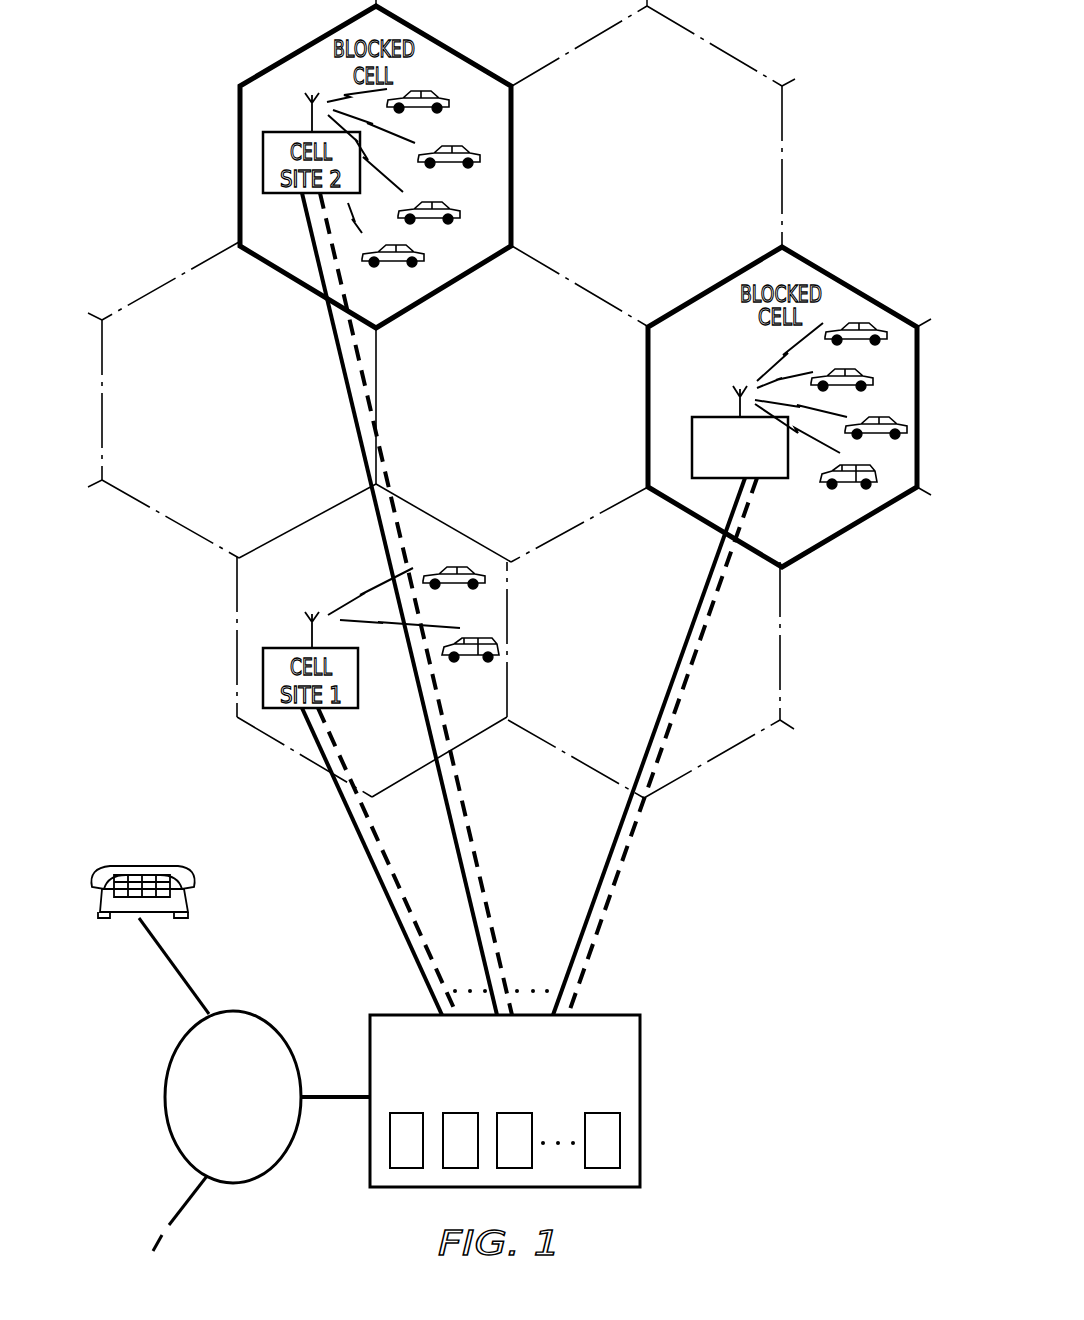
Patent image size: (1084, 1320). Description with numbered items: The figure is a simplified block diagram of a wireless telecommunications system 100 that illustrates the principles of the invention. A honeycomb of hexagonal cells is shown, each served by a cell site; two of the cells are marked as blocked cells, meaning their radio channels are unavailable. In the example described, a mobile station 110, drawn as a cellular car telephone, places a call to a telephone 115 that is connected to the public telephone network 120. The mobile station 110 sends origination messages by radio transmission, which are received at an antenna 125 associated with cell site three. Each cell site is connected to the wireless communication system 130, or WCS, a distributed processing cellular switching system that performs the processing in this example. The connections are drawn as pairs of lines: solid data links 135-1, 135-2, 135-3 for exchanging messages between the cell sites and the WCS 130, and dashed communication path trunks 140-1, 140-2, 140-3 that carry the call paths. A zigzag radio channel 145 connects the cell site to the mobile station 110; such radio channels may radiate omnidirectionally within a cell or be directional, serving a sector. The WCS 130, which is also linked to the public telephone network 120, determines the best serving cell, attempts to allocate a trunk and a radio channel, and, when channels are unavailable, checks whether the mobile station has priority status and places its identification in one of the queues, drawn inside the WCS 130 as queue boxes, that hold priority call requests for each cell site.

The wireless telecommunications system 100 is at (749, 809).
The mobile station 110 is at (858, 376).
The telephone 115 is at (138, 858).
The public telephone network 120 is at (264, 1014).
The antenna 125 is at (736, 378).
The wireless communication system (WCS) 130 is at (624, 1015).
The data link 135-1 is at (362, 843).
The data link 135-2 is at (463, 811).
The data link 135-3 is at (613, 852).
The communication path trunk 140-1 is at (396, 880).
The communication path trunk 140-2 is at (476, 852).
The communication path trunk 140-3 is at (609, 891).
The radio channel 145 is at (781, 358).